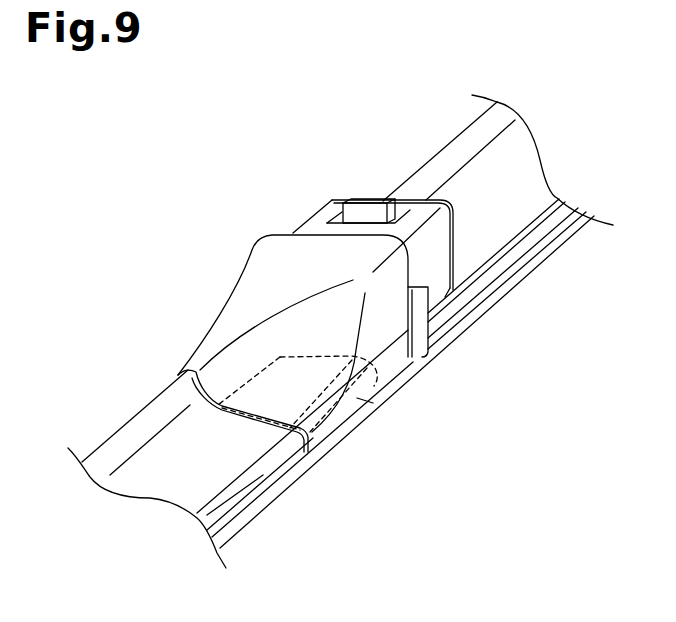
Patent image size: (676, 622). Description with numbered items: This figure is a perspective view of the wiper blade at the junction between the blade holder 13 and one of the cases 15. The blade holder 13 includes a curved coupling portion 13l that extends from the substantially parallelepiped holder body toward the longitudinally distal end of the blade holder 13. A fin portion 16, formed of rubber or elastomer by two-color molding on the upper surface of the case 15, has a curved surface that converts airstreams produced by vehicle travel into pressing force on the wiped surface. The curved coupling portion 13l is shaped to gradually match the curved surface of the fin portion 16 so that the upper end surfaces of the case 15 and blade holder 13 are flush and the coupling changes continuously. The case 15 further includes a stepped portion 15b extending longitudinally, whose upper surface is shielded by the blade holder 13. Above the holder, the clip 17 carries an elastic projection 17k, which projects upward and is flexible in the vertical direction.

The blade holder 13 is at (258, 240).
The curved coupling portion 13l is at (247, 345).
The case 15 is at (528, 240).
The stepped portion 15b is at (362, 400).
The fin portion 16 is at (465, 172).
The clip 17 is at (312, 218).
The elastic projection 17k is at (355, 200).